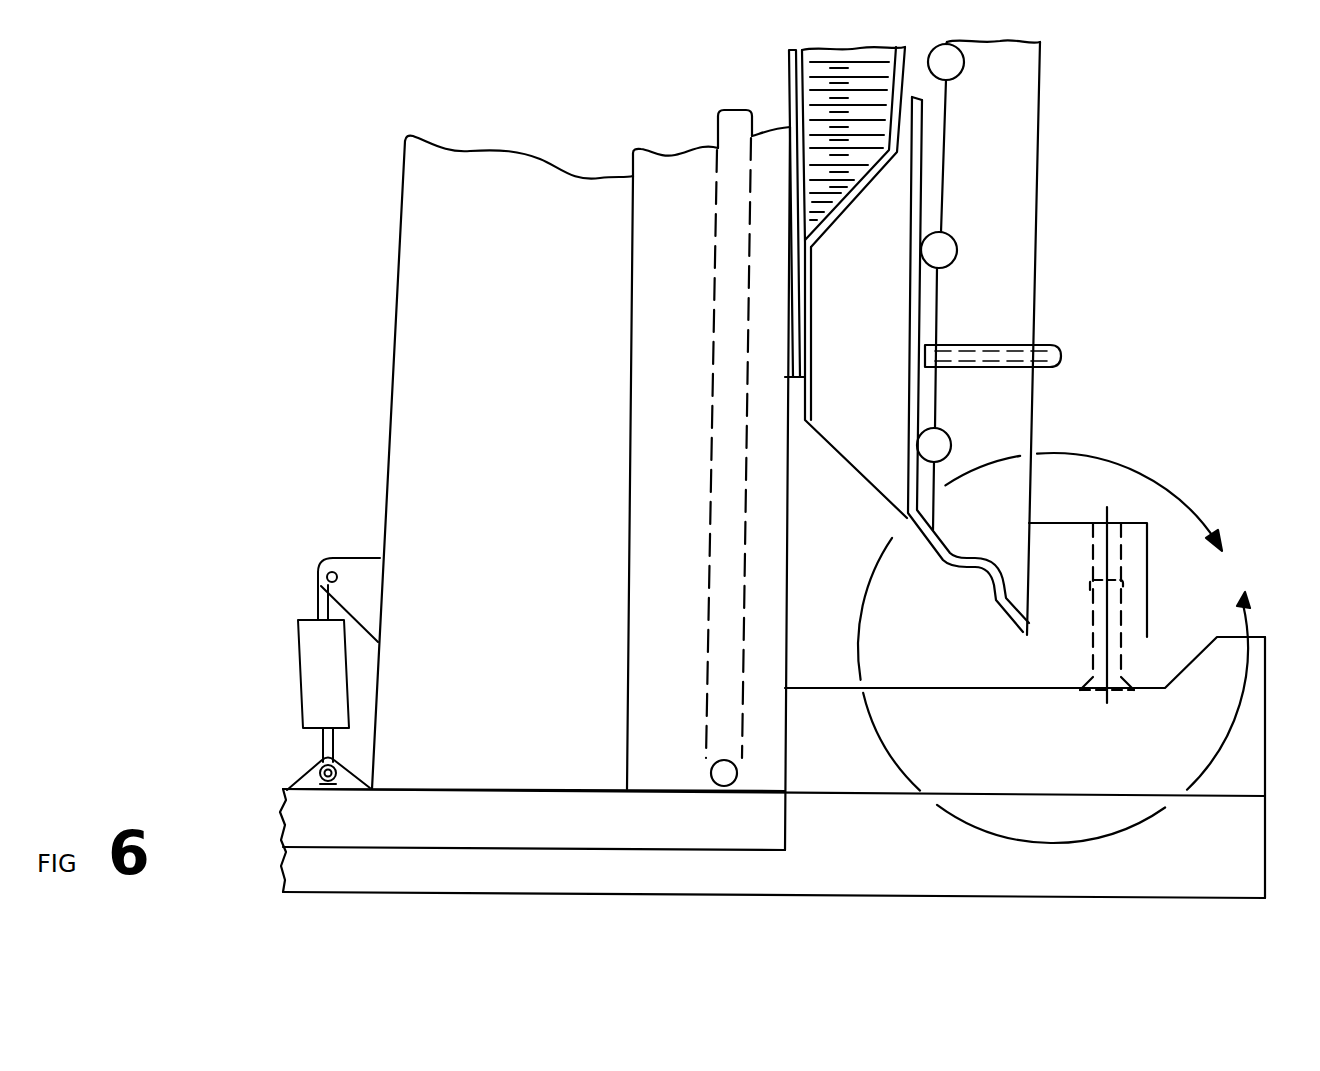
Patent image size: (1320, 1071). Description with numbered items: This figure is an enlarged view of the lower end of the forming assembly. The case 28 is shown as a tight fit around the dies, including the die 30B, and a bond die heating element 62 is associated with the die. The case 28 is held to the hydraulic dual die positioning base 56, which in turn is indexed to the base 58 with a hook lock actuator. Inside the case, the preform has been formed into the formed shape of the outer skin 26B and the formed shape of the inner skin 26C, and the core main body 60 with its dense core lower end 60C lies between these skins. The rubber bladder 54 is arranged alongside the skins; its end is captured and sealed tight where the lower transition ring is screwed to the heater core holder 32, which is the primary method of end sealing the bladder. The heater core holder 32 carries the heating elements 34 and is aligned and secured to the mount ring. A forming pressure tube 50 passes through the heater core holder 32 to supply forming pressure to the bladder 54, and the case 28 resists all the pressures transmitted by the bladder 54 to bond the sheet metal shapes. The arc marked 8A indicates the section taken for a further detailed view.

The case 28 is at (393, 375).
The die 30B is at (672, 156).
The bond die heating element 62 is at (722, 108).
The formed shape of outer skin 26B is at (792, 60).
The core main body 60 is at (833, 49).
The dense core lower end 60C is at (806, 188).
The formed shape of inner skin 26C is at (805, 320).
The rubber bladder 54 is at (907, 350).
The heating elements 34 is at (927, 428).
The forming pressure tube 50 is at (1057, 345).
The heater core holder 32 is at (1033, 507).
The hydraulic dual die positioning base 56 is at (287, 790).
The base 58 is at (285, 852).
The section indicator 8A is at (1073, 648).